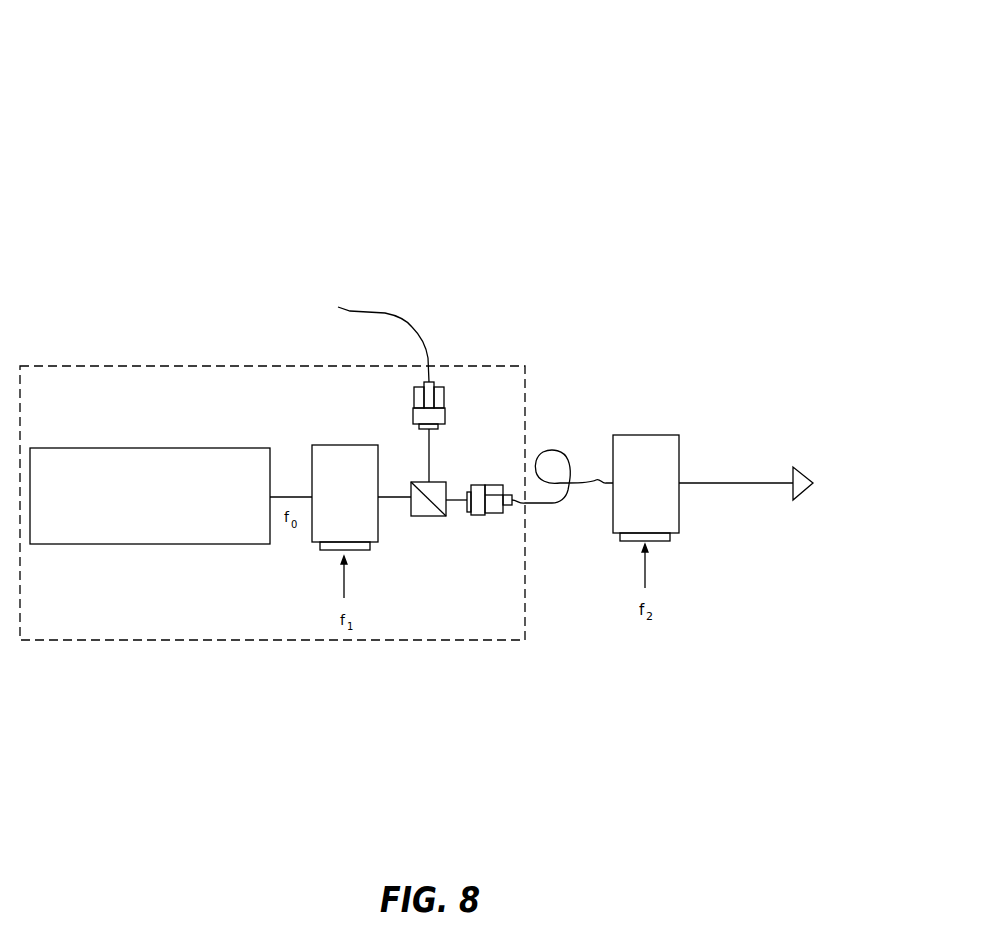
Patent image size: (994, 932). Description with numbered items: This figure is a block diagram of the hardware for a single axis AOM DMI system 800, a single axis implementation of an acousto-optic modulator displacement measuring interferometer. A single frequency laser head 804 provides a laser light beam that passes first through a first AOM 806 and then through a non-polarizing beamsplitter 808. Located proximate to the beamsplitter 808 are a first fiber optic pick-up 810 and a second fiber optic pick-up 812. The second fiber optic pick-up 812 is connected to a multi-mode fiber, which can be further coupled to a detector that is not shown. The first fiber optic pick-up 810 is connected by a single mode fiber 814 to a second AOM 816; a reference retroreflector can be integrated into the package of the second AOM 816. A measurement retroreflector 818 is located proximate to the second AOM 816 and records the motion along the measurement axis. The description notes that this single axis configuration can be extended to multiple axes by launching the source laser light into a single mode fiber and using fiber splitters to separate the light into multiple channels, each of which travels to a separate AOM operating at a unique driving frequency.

The single axis AOM DMI system 800 is at (76, 67).
The single frequency laser head 804 is at (133, 545).
The first AOM 806 is at (373, 543).
The non-polarizing beamsplitter 808 is at (443, 516).
The first fiber optic pick-up 810 is at (500, 485).
The second fiber optic pick-up 812 is at (410, 326).
The single mode fiber 814 is at (598, 480).
The second AOM 816 is at (646, 488).
The measurement retroreflector 818 is at (807, 480).